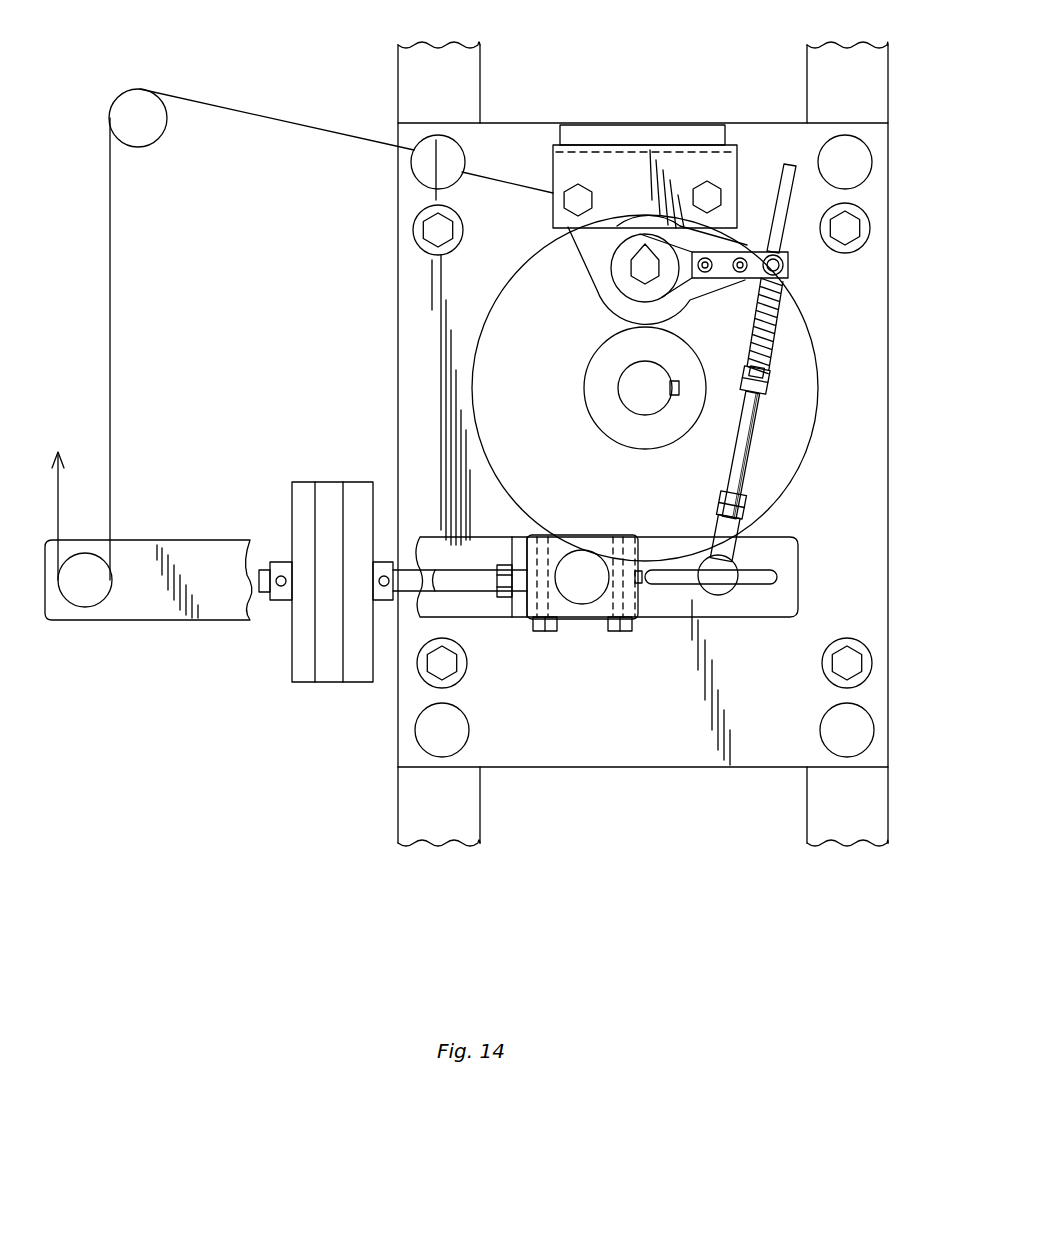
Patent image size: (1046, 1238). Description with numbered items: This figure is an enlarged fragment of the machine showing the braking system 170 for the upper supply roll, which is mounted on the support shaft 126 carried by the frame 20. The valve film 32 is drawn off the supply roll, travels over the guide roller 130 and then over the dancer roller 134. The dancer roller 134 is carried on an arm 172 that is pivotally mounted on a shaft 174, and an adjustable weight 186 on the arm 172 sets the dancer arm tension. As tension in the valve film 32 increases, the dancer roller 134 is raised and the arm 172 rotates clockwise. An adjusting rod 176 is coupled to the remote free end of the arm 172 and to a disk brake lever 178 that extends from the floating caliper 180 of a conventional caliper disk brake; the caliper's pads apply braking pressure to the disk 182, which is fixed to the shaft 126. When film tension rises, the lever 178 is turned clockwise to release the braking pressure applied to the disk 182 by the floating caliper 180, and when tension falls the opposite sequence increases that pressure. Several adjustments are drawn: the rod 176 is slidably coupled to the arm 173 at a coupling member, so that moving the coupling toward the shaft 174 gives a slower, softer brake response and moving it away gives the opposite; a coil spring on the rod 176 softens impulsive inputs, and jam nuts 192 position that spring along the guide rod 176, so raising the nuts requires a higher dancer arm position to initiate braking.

The frame 20 is at (484, 797).
The valve film 32 is at (300, 124).
The support shaft 126 is at (636, 400).
The guide roller 130 is at (155, 128).
The dancer roller 134 is at (90, 595).
The braking system 170 is at (537, 122).
The arm 172 is at (240, 615).
The arm 173 is at (658, 605).
The shaft 174 is at (578, 592).
The adjusting rod 176 is at (745, 440).
The disk brake lever 178 is at (632, 262).
The floating caliper 180 is at (553, 160).
The disk 182 is at (508, 472).
The adjustable weight 186 is at (332, 675).
The jam nuts 192 is at (748, 392).